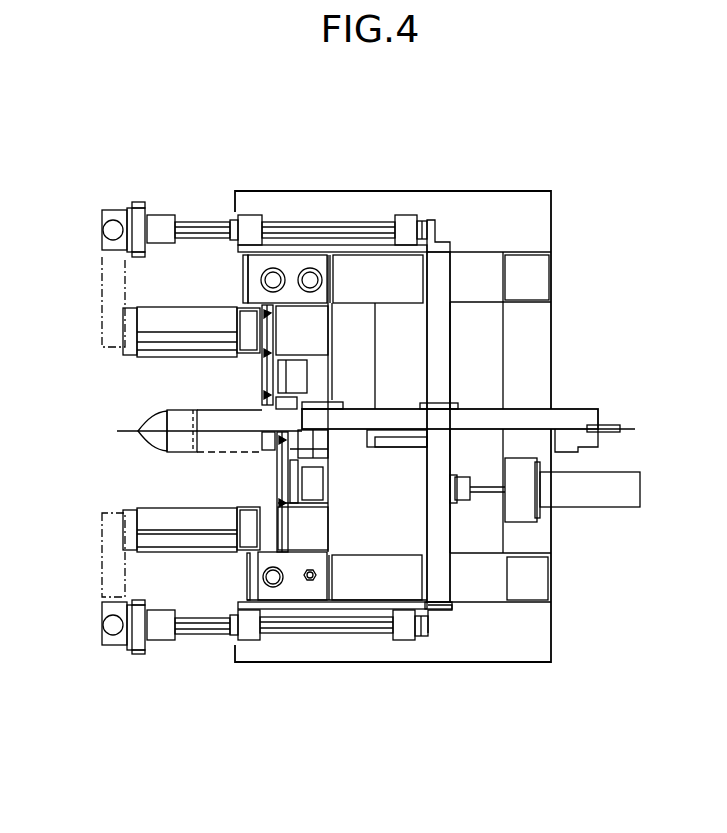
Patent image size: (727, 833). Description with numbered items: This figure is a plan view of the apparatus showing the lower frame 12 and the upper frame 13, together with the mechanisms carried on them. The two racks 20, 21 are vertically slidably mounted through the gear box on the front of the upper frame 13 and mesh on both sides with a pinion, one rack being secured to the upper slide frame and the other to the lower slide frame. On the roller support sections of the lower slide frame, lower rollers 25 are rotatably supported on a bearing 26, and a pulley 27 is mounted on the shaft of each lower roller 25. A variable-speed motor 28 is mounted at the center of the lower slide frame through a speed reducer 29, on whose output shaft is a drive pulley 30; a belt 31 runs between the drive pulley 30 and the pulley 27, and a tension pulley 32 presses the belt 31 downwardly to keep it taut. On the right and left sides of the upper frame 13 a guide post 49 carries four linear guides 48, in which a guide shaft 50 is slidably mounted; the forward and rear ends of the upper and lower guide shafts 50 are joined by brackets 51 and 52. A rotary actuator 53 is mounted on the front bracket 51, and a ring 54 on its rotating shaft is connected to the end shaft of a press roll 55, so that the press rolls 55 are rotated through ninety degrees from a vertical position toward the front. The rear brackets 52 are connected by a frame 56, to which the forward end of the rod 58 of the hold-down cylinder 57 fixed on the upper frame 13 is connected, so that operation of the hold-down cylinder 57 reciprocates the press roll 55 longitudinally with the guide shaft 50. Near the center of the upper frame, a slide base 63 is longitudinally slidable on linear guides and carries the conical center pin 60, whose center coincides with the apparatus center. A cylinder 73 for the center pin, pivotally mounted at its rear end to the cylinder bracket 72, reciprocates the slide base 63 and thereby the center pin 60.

The lower frame 12 is at (532, 666).
The upper frame 13 is at (530, 607).
The rack 20 is at (255, 283).
The rack 21 is at (300, 272).
The lower roller 25 is at (164, 358).
The bearing 26 is at (132, 327).
The pulley 27 is at (308, 321).
The variable-speed motor 28 is at (398, 446).
The speed reducer 29 is at (353, 458).
The drive pulley 30 is at (268, 446).
The belt 31 is at (262, 378).
The tension pulley 32 is at (266, 396).
The linear guide 48 is at (250, 213).
The guide post 49 is at (308, 242).
The guide shaft 50 is at (203, 221).
The bracket 51 is at (140, 205).
The bracket 52 is at (427, 219).
The rotary actuator 53 is at (165, 214).
The ring 54 is at (115, 210).
The press roll 55 is at (103, 232).
The frame 56 is at (450, 588).
The hold-down cylinder 57 is at (593, 508).
The rod 58 is at (487, 496).
The center pin 60 is at (262, 426).
The slide base 63 is at (578, 406).
The cylinder bracket 72 is at (620, 425).
The cylinder for center pin 73 is at (523, 420).